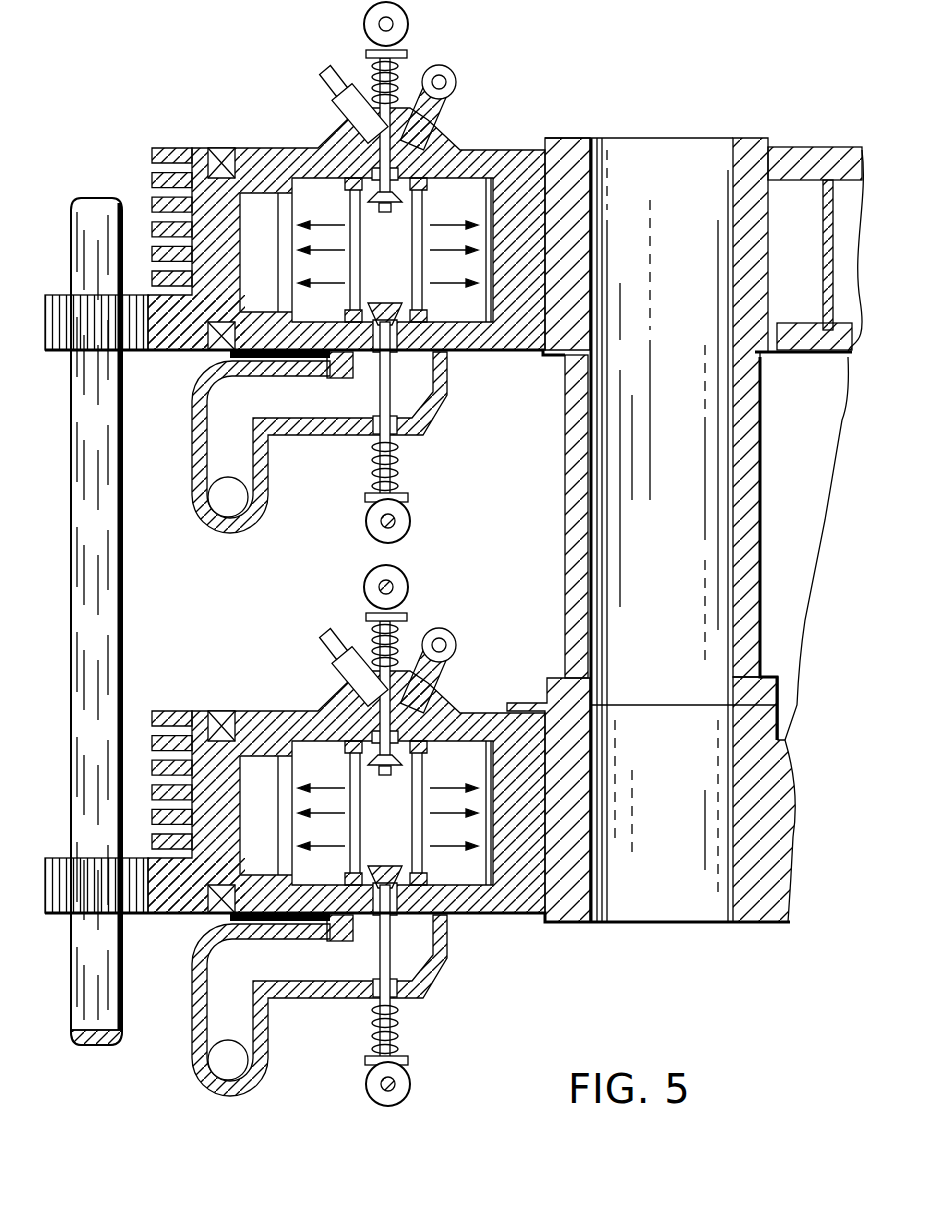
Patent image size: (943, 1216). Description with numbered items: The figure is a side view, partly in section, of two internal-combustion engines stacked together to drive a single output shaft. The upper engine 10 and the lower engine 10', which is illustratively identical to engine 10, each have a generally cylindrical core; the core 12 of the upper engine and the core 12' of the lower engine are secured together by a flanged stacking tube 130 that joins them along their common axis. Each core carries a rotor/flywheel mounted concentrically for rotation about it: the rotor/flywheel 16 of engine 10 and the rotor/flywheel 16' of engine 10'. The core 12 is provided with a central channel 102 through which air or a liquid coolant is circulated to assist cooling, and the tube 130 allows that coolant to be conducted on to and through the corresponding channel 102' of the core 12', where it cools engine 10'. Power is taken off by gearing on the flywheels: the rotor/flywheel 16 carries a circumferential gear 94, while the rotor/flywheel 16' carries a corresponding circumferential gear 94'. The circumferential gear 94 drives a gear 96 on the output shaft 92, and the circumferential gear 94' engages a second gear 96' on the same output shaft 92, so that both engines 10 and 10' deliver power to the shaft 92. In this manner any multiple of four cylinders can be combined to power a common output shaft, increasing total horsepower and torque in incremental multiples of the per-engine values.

The internal-combustion engine 10 is at (346, 177).
The engine 10' is at (346, 740).
The core 12 is at (570, 219).
The core 12' is at (543, 791).
The rotor/flywheel 16 is at (305, 442).
The rotor/flywheel 16' is at (305, 1005).
The output shaft 92 is at (92, 205).
The circumferential gear 94 is at (188, 343).
The circumferential gear 94' is at (189, 906).
The gear 96 is at (86, 296).
The second gear 96' is at (86, 906).
The central channel 102 is at (730, 383).
The channel 102' is at (794, 799).
The flanged stacking tube 130 is at (575, 507).